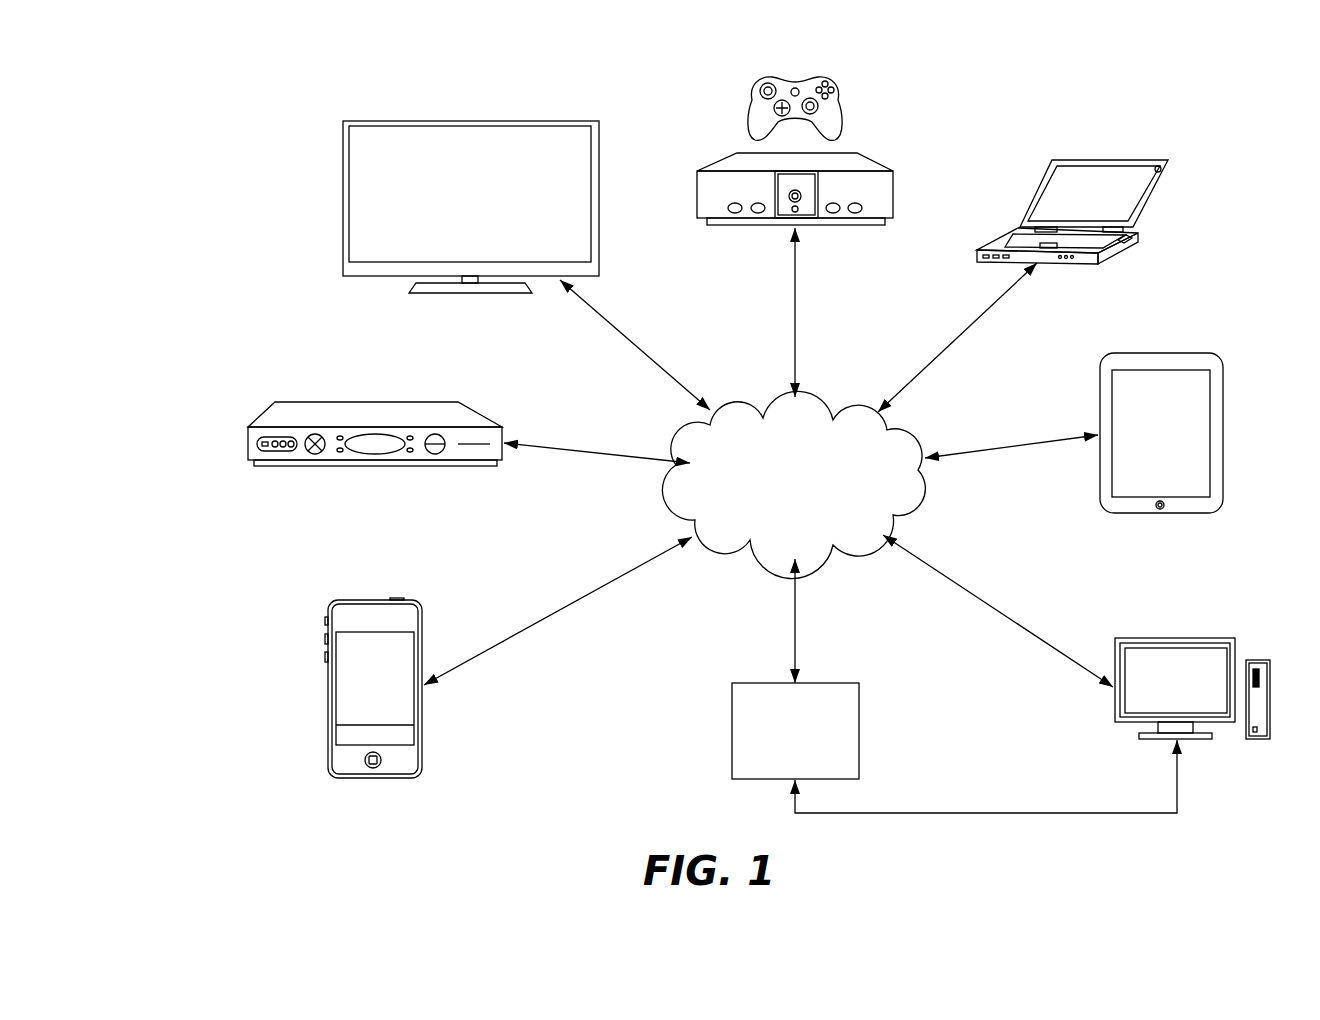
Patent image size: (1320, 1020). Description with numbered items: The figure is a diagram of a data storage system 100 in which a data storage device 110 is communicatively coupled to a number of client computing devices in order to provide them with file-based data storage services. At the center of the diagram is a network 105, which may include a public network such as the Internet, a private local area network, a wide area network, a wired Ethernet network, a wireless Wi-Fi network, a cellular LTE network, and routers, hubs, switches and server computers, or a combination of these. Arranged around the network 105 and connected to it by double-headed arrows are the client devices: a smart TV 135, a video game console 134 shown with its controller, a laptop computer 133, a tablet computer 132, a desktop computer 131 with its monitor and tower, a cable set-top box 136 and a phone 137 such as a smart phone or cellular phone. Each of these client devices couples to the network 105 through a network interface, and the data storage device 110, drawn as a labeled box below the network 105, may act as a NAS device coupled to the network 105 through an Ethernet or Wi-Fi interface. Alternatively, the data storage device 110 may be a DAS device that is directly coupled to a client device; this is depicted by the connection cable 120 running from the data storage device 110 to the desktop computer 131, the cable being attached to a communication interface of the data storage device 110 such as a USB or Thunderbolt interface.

The data storage system 100 is at (236, 143).
The network 105 is at (768, 457).
The data storage device 110 is at (859, 731).
The connection cable 120 is at (987, 813).
The desktop computer 131 is at (1175, 638).
The tablet computer 132 is at (1160, 353).
The laptop computer 133 is at (1105, 158).
The video game console 134 is at (874, 153).
The smart TV 135 is at (470, 119).
The cable set-top box 136 is at (383, 402).
The phone 137 is at (373, 600).